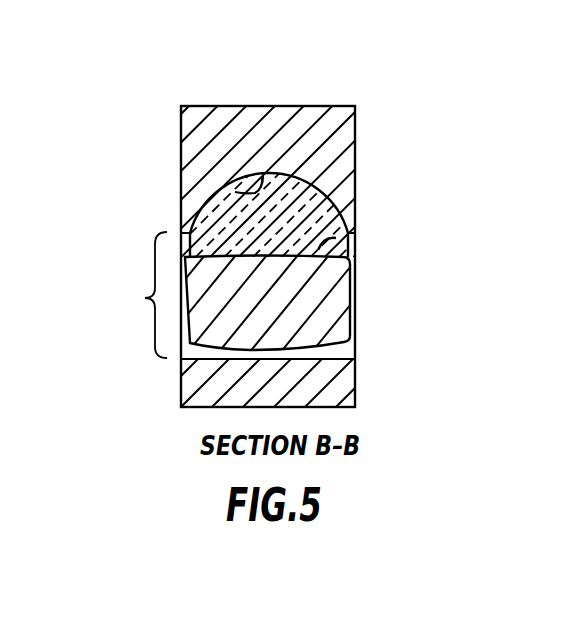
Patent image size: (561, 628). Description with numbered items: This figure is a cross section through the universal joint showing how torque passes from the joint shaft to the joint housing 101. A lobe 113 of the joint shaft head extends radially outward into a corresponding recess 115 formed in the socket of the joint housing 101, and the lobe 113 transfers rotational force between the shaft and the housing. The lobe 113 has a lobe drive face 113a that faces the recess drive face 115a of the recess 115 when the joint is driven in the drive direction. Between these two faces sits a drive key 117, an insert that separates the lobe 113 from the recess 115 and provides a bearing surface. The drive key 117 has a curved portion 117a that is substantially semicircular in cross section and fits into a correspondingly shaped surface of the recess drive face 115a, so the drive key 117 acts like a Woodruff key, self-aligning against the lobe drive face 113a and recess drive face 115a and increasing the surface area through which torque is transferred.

The joint housing 101 is at (316, 106).
The lobe 113 is at (330, 285).
The lobe drive face 113a is at (335, 238).
The recess 115 is at (145, 298).
The recess drive face 115a is at (255, 193).
The drive key 117 is at (307, 197).
The curved portion 117a is at (264, 176).